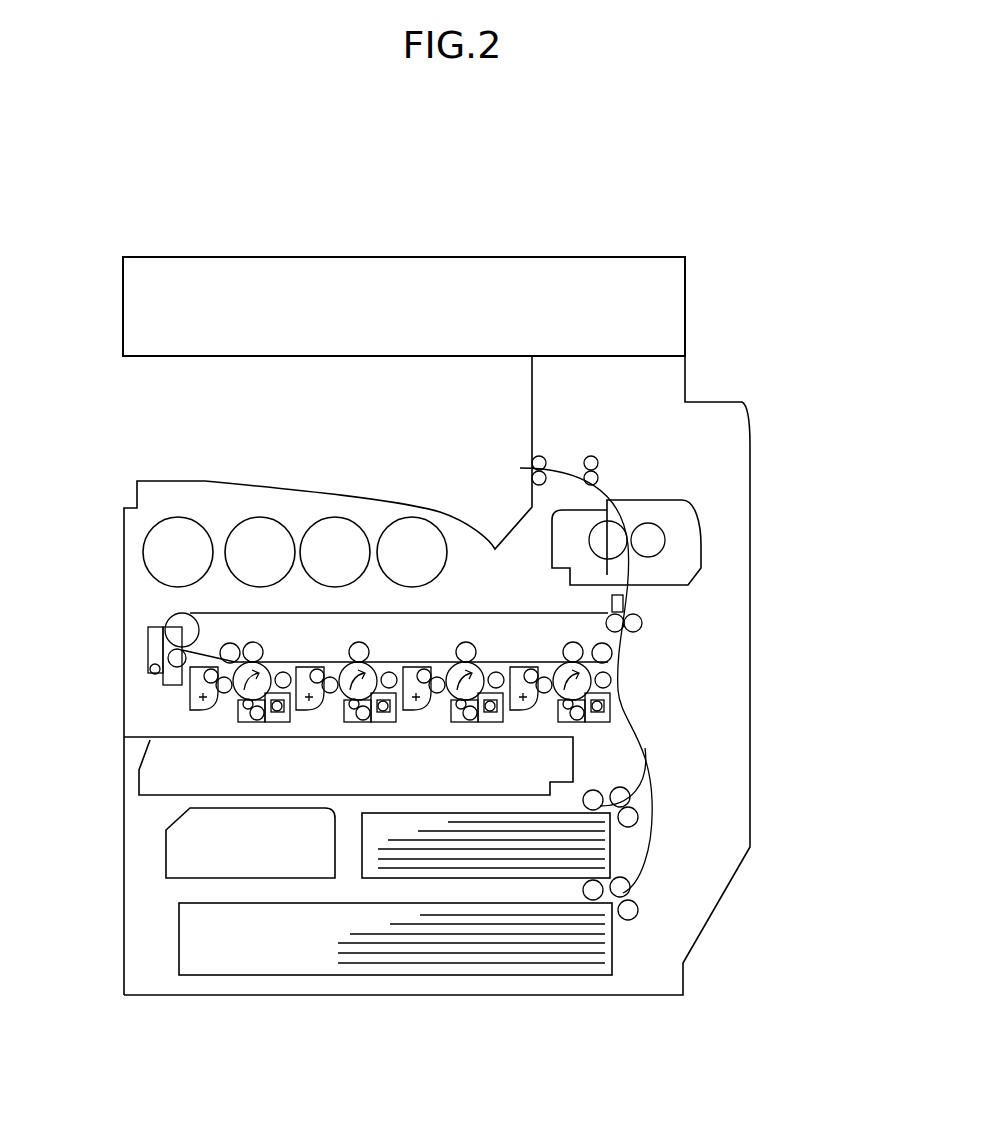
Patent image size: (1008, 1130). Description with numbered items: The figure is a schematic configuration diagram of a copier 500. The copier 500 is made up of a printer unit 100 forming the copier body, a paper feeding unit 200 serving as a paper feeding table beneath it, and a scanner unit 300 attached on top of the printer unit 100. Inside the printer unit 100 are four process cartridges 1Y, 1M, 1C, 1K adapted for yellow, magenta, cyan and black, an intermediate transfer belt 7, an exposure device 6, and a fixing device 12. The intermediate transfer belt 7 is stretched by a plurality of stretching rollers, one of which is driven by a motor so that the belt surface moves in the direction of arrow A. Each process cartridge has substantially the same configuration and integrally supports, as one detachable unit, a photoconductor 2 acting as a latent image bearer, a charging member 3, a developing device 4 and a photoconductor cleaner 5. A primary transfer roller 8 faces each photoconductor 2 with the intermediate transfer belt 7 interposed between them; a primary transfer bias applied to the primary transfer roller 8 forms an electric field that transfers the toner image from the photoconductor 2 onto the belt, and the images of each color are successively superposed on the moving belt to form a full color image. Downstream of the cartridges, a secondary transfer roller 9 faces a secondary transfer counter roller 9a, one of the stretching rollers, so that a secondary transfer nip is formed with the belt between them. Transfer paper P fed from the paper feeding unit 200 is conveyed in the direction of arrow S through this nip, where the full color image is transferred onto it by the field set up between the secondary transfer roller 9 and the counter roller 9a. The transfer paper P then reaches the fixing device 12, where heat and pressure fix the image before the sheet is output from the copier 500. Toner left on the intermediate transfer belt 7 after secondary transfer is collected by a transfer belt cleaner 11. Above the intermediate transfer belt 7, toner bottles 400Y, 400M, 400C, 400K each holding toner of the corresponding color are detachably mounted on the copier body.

The copier 500 is at (723, 306).
The scanner unit 300 is at (500, 256).
The printer unit 100 is at (702, 657).
The paper feeding unit 200 is at (705, 868).
The toner bottle 400Y is at (178, 517).
The toner bottle 400M is at (260, 517).
The toner bottle 400C is at (335, 517).
The toner bottle 400K is at (412, 517).
The fixing device 12 is at (690, 505).
The intermediate transfer belt 7 is at (208, 612).
The transfer belt cleaner 11 is at (148, 645).
The secondary transfer roller 9 is at (641, 620).
The secondary transfer counter roller 9a is at (612, 620).
The process cartridge 1Y is at (250, 728).
The process cartridge 1M is at (365, 730).
The process cartridge 1C is at (474, 729).
The process cartridge 1K is at (600, 733).
The photoconductor 2 is at (263, 661).
The primary transfer roller 8 is at (258, 646).
The developing device 4 is at (190, 690).
The charging member 3 is at (240, 715).
The photoconductor cleaner 5 is at (286, 705).
The exposure device 6 is at (165, 797).
The transfer paper P is at (445, 878).
The arrow S is at (634, 658).
The arrow A is at (450, 605).